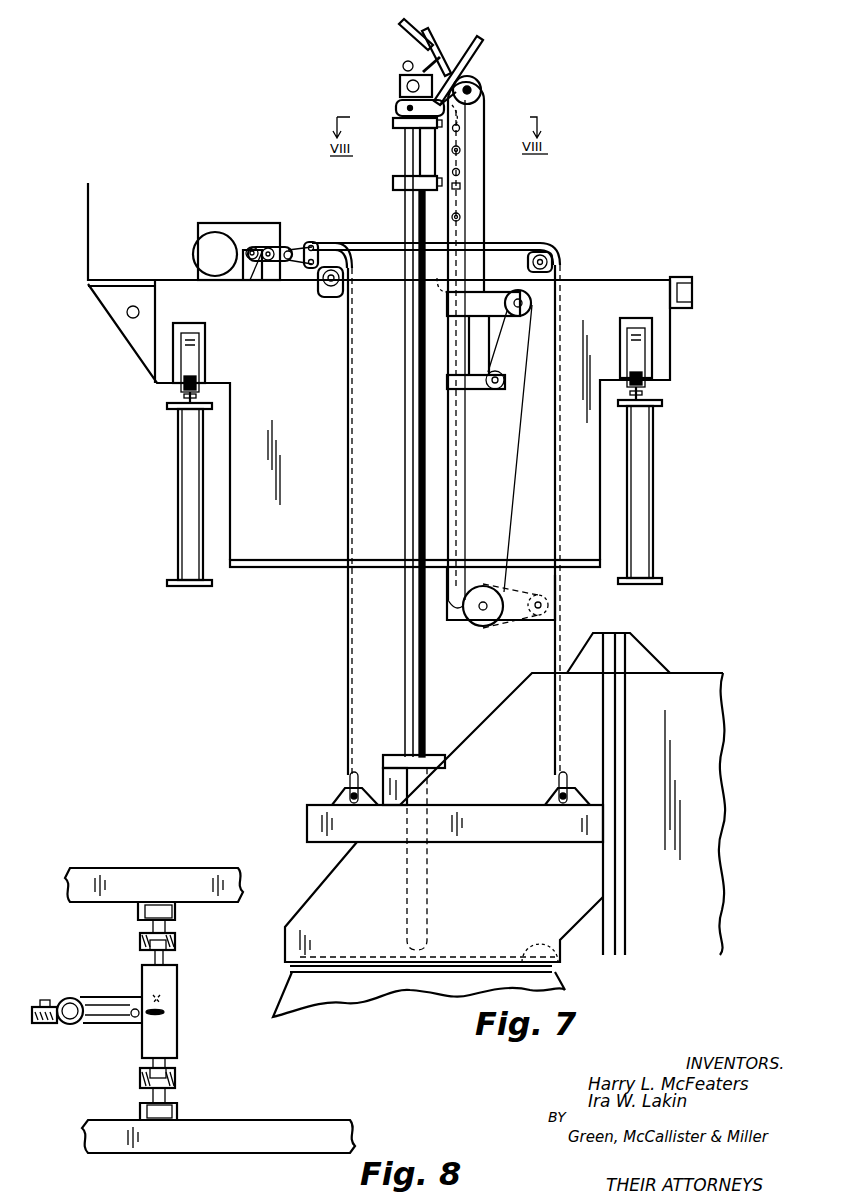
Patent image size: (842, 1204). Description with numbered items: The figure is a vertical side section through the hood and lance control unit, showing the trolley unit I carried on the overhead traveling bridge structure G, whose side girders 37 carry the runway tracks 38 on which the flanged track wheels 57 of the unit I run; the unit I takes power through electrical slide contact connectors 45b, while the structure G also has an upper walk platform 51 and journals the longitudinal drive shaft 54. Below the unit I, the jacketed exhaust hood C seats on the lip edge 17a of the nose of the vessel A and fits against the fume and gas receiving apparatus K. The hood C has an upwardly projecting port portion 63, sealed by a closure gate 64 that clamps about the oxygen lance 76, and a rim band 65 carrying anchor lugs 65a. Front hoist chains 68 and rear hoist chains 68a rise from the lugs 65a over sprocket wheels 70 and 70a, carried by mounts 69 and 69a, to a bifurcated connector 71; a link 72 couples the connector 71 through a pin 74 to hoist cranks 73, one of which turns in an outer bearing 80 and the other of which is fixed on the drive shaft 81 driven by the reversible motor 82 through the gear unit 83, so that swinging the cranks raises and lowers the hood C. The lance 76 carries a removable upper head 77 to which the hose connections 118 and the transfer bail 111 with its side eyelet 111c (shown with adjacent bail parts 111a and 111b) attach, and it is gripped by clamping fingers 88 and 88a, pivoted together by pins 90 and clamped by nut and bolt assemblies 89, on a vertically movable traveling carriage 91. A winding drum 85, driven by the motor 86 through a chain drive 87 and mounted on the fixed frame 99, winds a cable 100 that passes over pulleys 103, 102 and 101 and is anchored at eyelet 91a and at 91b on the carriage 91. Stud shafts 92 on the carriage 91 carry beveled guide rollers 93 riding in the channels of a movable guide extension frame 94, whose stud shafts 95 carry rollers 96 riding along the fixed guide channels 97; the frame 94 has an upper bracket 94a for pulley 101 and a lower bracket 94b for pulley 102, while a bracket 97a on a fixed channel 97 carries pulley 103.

In FIG. 7, the lip edge 17a is at (560, 966).
In FIG. 7, the side girders 37 is at (176, 437).
In FIG. 7, the runway tracks 38 is at (186, 399).
In FIG. 7, the electrical slide contact connectors 45b is at (690, 283).
In FIG. 7, the upper walk platform 51 is at (113, 280).
In FIG. 7, the longitudinal drive shaft 54 is at (126, 312).
In FIG. 7, the flanged track wheels 57 is at (190, 350).
In FIG. 7, the open port portion 63 is at (385, 772).
In FIG. 7, the closure gate 64 is at (437, 752).
In FIG. 7, the rim ring 65 is at (307, 824).
In FIG. 7, the anchor lugs 65a is at (332, 800).
In FIG. 7, the front hood hoist chains 68 is at (347, 615).
In FIG. 7, the rear hoist chains 68a is at (567, 612).
In FIG. 7, the mounts 69 is at (328, 290).
In FIG. 7, the rear mounts 69a is at (552, 264).
In FIG. 7, the sprocket wheels 70 is at (320, 285).
In FIG. 7, the sprockets 70a is at (558, 250).
In FIG. 7, the bifurcated connector 71 is at (313, 242).
In FIG. 7, the link 72 is at (292, 251).
In FIG. 7, the hoist cranks 73 is at (264, 262).
In FIG. 7, the crank shaft pin 74 is at (272, 247).
In FIG. 7, the oxygen lance 76 is at (405, 343).
In FIG. 8, the oxygen lance 76 is at (62, 1023).
In FIG. 7, the removable upper head 77 is at (400, 82).
In FIG. 7, the outer bearing 80 is at (248, 282).
In FIG. 7, the drive shaft 81 is at (250, 246).
In FIG. 7, the reversible motor 82 is at (193, 258).
In FIG. 7, the gear unit 83 is at (205, 225).
In FIG. 7, the winding drum 85 is at (486, 630).
In FIG. 7, the reversible electric motor 86 is at (538, 618).
In FIG. 7, the chain drive 87 is at (522, 585).
In FIG. 7, the clamping fingers 88 is at (395, 183).
In FIG. 8, the clamping fingers 88 is at (105, 1023).
In FIG. 8, the clamping fingers 88a is at (108, 997).
In FIG. 8, the nut and bolt assemblies 89 is at (43, 1000).
In FIG. 8, the pins 90 is at (133, 1018).
In FIG. 7, the traveling carriage 91 is at (430, 145).
In FIG. 8, the traveling carriage 91 is at (177, 978).
In FIG. 7, the anchor eyelet 91a is at (468, 118).
In FIG. 8, the anchor eyelet 91a is at (165, 1013).
In FIG. 7, the cable anchor 91b is at (466, 190).
In FIG. 7, the transverse stud shafts 92 is at (464, 172).
In FIG. 8, the transverse stud shafts 92 is at (153, 957).
In FIG. 7, the beveled guide rollers 93 is at (463, 144).
In FIG. 8, the beveled guide rollers 93 is at (168, 948).
In FIG. 7, the movable guide extension frame 94 is at (452, 222).
In FIG. 8, the movable guide extension frame 94 is at (140, 940).
In FIG. 7, the upper bifurcated bracket 94a is at (483, 101).
In FIG. 7, the bifurcated bracket 94b is at (489, 390).
In FIG. 8, the stud shafts 95 is at (165, 928).
In FIG. 7, the beveled guide rollers 96 is at (472, 245).
In FIG. 8, the beveled guide rollers 96 is at (175, 920).
In FIG. 7, the fixed guide channels 97 is at (470, 497).
In FIG. 8, the fixed guide channels 97 is at (138, 912).
In FIG. 7, the bifurcated bracket 97a is at (498, 292).
In FIG. 7, the fixed frame 99 is at (289, 570).
In FIG. 8, the fixed frame 99 is at (102, 870).
In FIG. 7, the raising and lowering cable 100 is at (487, 228).
In FIG. 8, the raising and lowering cable 100 is at (162, 1000).
In FIG. 7, the pulley 101 is at (479, 81).
In FIG. 7, the pulley 102 is at (507, 392).
In FIG. 7, the pulley 103 is at (532, 303).
In FIG. 7, the transfer bail 111 is at (430, 57).
In FIG. 7, the lever arm 111a is at (395, 108).
In FIG. 7, the lever arm 111b is at (482, 40).
In FIG. 7, the side eyelet 111c is at (400, 25).
In FIG. 7, the hose connections 118 is at (436, 52).
In FIG. 7, the vessel A is at (326, 1005).
In FIG. 7, the exhaust hood C is at (504, 797).
In FIG. 7, the overhead traveling bridge frame structure G is at (176, 528).
In FIG. 7, the hood and lance control unit I is at (640, 280).
In FIG. 7, the fume and gas receiving apparatus K is at (718, 822).